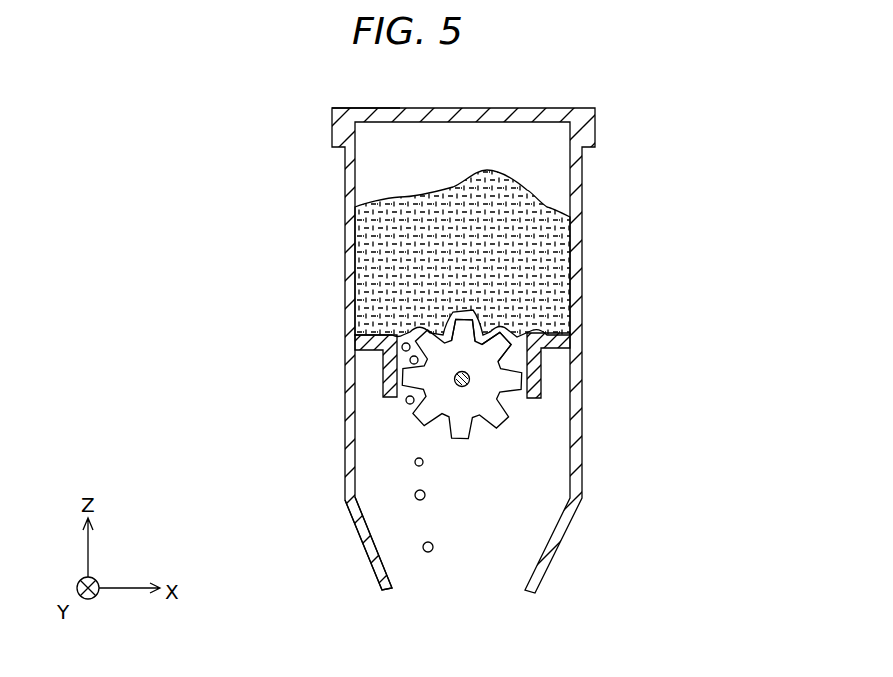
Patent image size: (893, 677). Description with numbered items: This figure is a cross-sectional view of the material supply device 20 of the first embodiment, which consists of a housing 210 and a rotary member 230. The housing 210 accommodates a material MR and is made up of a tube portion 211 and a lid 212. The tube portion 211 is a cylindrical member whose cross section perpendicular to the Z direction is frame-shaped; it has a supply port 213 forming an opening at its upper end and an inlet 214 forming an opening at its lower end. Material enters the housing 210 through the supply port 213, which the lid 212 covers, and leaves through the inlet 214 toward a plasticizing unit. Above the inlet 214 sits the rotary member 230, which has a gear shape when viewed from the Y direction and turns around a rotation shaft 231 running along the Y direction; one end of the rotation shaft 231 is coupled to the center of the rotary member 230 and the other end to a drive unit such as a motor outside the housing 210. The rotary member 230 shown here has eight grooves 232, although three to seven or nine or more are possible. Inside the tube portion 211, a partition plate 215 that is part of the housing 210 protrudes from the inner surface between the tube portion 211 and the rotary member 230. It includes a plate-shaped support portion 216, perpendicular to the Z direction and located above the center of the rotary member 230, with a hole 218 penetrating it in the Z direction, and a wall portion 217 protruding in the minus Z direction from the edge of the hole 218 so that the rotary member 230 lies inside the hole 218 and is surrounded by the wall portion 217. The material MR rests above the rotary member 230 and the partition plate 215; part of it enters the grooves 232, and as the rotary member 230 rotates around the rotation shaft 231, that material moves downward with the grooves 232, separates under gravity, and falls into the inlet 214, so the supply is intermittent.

The material supply device 20 is at (191, 125).
The housing 210 is at (685, 110).
The tube portion 211 is at (583, 176).
The lid 212 is at (590, 146).
The supply port 213 is at (366, 134).
The inlet 214 is at (392, 586).
The partition plate 215 is at (652, 345).
The support portion 216 is at (557, 348).
The wall portion 217 is at (541, 392).
The hole 218 is at (403, 335).
The rotary member 230 is at (482, 395).
The rotation shaft 231 is at (462, 386).
The grooves 232 is at (443, 320).
The material MR is at (355, 243).